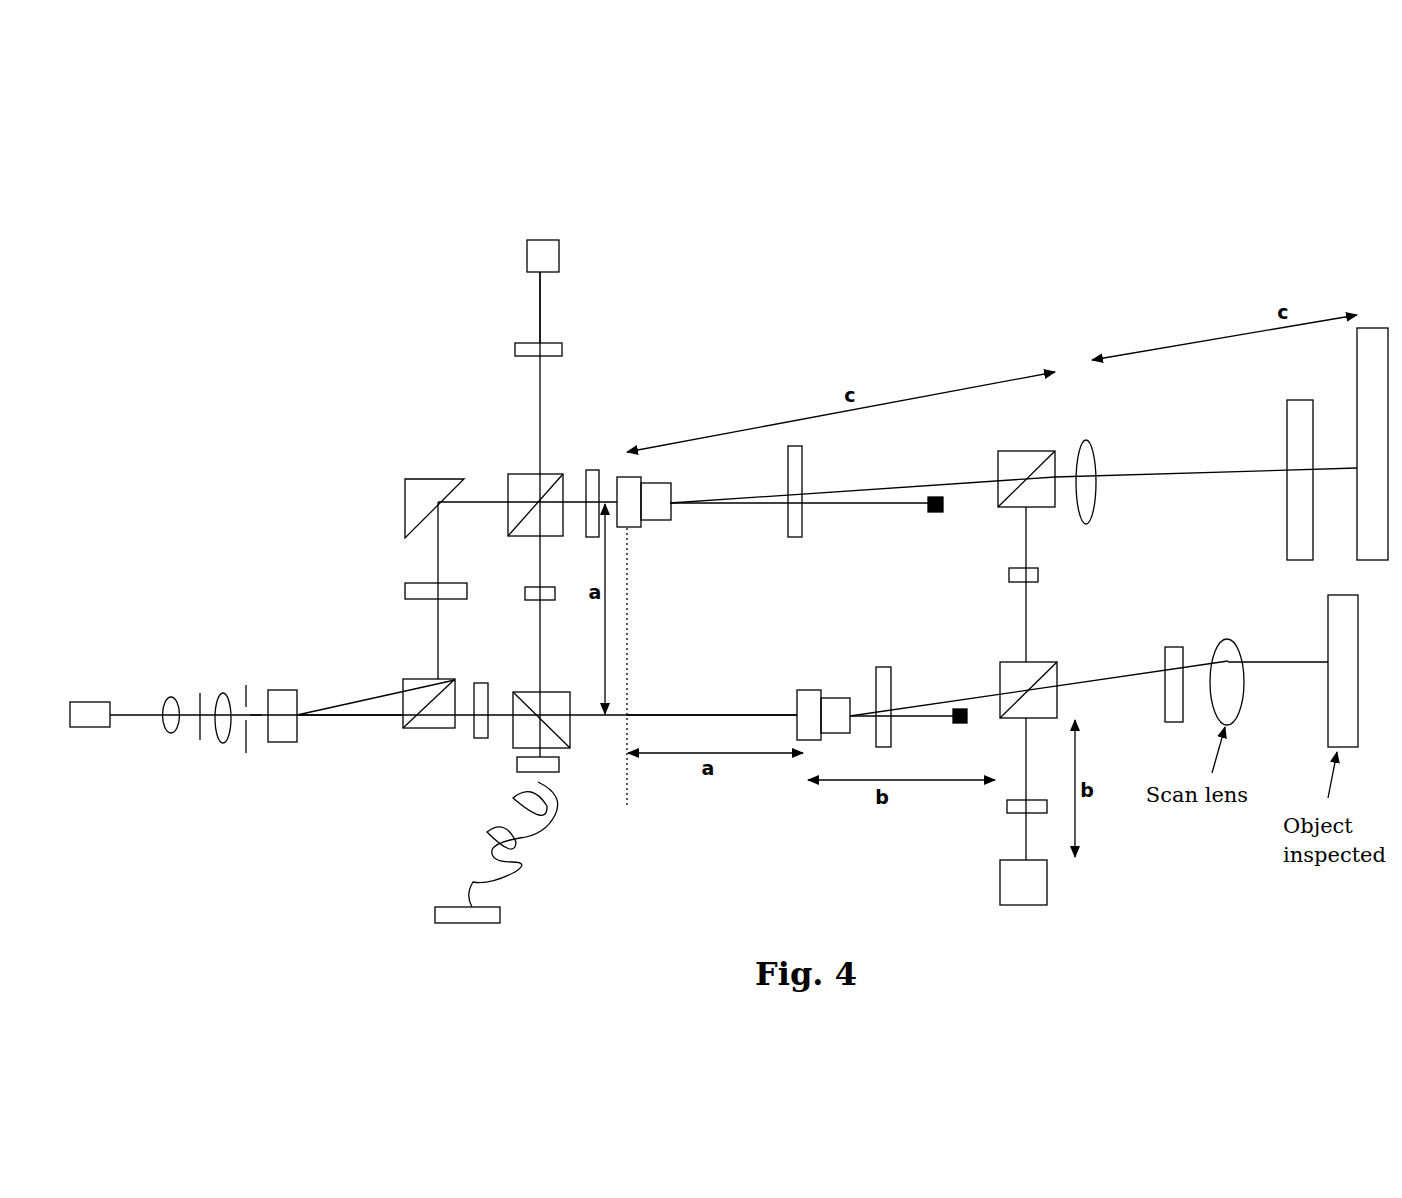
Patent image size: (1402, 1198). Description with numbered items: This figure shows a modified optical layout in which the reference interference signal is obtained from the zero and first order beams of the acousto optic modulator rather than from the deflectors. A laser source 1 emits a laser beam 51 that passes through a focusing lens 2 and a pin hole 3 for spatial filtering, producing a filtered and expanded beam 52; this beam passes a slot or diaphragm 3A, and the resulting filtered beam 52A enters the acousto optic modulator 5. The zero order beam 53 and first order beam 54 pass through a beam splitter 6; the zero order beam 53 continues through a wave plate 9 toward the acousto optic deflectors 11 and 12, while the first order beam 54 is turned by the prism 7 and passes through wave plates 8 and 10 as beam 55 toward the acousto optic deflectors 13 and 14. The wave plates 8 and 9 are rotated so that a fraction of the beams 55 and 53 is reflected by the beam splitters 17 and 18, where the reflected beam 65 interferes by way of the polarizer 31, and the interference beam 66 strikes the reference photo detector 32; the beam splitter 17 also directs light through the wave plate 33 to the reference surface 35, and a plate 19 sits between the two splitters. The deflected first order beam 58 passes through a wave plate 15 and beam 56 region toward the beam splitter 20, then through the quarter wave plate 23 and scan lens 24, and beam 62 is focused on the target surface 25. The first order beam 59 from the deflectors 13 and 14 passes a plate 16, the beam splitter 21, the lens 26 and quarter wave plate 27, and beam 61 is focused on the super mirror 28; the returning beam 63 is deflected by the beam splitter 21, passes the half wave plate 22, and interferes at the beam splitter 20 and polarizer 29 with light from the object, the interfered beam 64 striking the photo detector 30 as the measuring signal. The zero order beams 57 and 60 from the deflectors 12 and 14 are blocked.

The laser source 1 is at (83, 728).
The focusing lens 2 is at (171, 697).
The pin hole 3 is at (223, 693).
The slot or diaphragm 3A is at (245, 753).
The acousto optic modulator 5 is at (277, 742).
The beam splitter 6 is at (443, 728).
The prism 7 is at (440, 479).
The wave plate 8 is at (405, 588).
The wave plate 9 is at (480, 683).
The wave plate 10 is at (590, 537).
The acousto optic deflector 11 is at (807, 690).
The acousto optic deflector 12 is at (827, 698).
The acousto optic deflector 13 is at (627, 477).
The acousto optic deflector 14 is at (660, 520).
The wave plate 15 is at (880, 667).
The lens 16 is at (795, 537).
The beam splitter 17 is at (538, 692).
The beam splitter 18 is at (547, 474).
The filter 19 is at (525, 593).
The beam splitter 20 is at (1040, 662).
The beam splitter 21 is at (1017, 451).
The half wave plate 22 is at (1038, 575).
The quarter wave plate 23 is at (1172, 645).
The scan lens 24 is at (1227, 638).
The target surface 25 is at (1318, 722).
The collimating or focusing lens 26 is at (1080, 438).
The quarter wave plate 27 is at (1302, 390).
The super mirror 28 is at (1370, 335).
The polarizer 29 is at (1007, 807).
The photo detector 30 is at (998, 873).
The polarizer 31 is at (547, 338).
The photo detector 32 is at (563, 257).
The wave plate 33 is at (559, 764).
The reference surface 35 is at (435, 913).
The laser beam 51 is at (135, 715).
The filtered and expanded beam 52 is at (242, 687).
The filtered beam 52A is at (256, 720).
The zero order beam 53 is at (355, 717).
The first order beam 54 is at (343, 705).
The beam 55 is at (478, 497).
The beam path 56 is at (703, 710).
The zero order beam 57 is at (900, 717).
The first order beam 58 is at (1090, 677).
The first order beam 59 is at (713, 498).
The zero order beam 60 is at (753, 503).
The beam 61 is at (1198, 473).
The beam 62 is at (1270, 662).
The beam 63 is at (1027, 543).
The interfered beam 64 is at (1027, 843).
The reflected beam 65 is at (538, 562).
The interference beam 66 is at (540, 316).